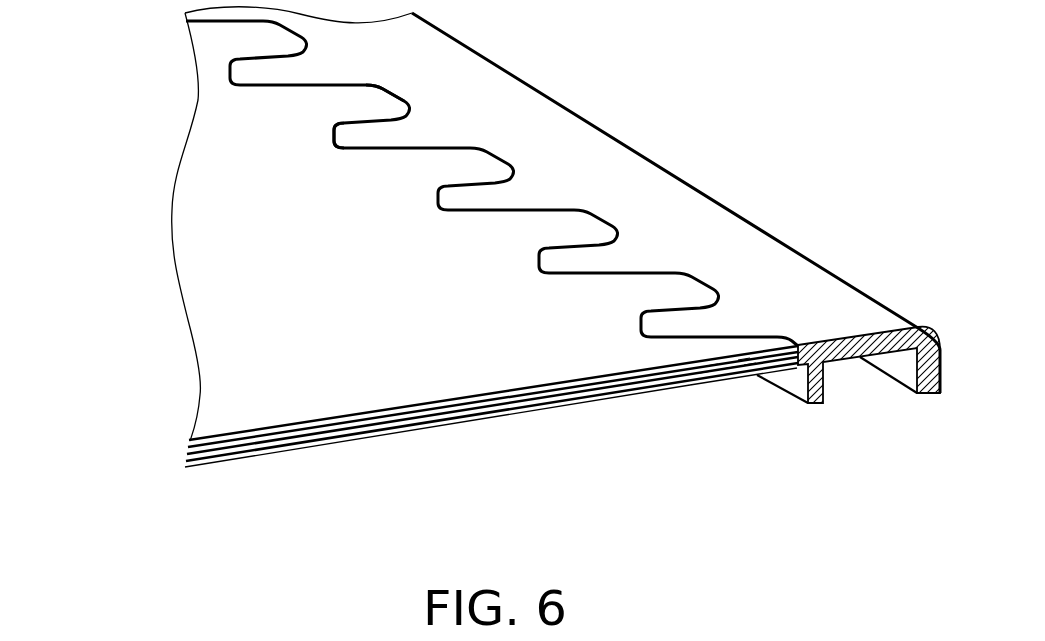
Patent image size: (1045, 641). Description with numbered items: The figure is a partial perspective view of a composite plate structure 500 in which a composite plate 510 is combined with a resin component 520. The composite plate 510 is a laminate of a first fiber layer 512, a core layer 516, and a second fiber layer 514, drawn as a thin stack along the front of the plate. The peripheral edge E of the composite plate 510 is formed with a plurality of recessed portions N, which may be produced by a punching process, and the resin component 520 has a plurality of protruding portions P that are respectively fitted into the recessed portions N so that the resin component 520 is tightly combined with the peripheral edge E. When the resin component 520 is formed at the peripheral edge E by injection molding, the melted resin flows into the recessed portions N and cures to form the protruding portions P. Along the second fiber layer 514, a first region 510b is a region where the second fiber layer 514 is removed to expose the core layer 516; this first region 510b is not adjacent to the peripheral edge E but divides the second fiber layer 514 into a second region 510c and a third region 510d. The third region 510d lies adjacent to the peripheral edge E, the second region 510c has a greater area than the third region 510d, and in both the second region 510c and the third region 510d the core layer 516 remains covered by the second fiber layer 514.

The composite plate structure 500 is at (919, 532).
The composite plate 510 is at (427, 427).
The first fiber layer 512 is at (208, 446).
The second fiber layer 514 is at (202, 470).
The core layer 516 is at (190, 456).
The first region 510b is at (744, 379).
The second region 510c is at (690, 390).
The third region 510d is at (767, 376).
The resin component 520 is at (501, 222).
The peripheral edge E is at (392, 96).
The protruding portions P is at (363, 138).
The recessed portions N is at (336, 143).